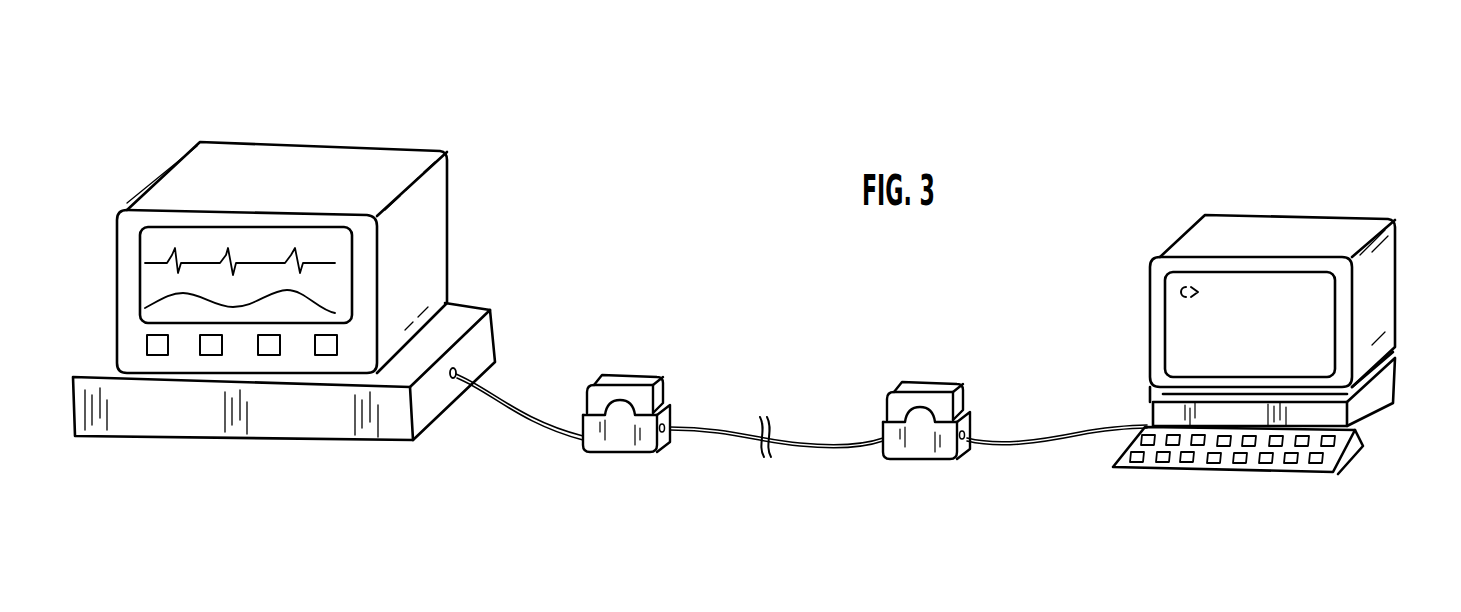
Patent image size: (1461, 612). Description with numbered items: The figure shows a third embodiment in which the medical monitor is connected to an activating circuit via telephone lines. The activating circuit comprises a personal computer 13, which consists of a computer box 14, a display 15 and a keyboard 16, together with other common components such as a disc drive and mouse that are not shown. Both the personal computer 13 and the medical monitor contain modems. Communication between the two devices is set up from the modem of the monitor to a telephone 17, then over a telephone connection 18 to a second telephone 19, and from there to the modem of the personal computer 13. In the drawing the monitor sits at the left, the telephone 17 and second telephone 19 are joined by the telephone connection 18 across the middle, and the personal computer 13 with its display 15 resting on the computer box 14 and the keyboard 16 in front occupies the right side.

The personal computer 13 is at (1288, 198).
The computer box 14 is at (1393, 397).
The display 15 is at (1397, 256).
The keyboard 16 is at (1352, 443).
The telephone 17 is at (632, 378).
The telephone connection 18 is at (730, 425).
The second telephone 19 is at (930, 382).